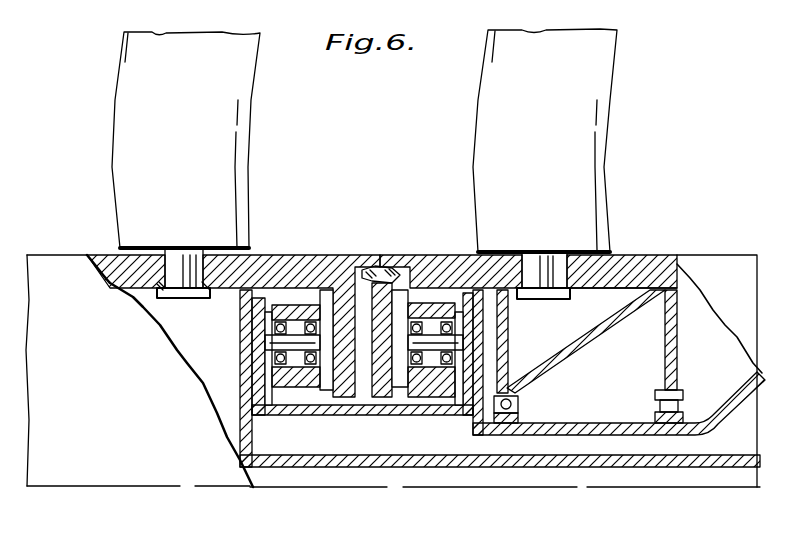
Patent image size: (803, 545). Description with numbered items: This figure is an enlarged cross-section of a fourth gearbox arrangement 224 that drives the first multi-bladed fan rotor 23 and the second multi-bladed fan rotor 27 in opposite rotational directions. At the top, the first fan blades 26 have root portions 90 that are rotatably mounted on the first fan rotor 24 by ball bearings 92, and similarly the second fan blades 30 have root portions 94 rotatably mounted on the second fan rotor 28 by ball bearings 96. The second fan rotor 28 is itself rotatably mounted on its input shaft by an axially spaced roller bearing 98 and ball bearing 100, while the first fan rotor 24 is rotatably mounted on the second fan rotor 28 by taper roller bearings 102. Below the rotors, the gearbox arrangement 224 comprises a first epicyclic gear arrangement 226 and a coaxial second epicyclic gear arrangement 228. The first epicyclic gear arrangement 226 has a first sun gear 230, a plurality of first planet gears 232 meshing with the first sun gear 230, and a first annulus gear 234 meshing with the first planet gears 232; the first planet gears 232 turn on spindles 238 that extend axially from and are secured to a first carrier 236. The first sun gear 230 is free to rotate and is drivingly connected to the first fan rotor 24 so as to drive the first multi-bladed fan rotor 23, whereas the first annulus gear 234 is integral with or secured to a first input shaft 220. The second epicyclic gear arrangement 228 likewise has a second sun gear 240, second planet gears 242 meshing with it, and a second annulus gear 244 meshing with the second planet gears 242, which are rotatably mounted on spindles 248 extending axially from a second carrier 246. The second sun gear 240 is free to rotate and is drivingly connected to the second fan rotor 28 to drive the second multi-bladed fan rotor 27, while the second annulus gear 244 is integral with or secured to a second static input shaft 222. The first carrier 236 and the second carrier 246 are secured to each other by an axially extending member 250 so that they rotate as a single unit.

The first multi-bladed fan rotor 23 is at (108, 136).
The first fan blades 26 is at (133, 73).
The second multi-bladed fan rotor 27 is at (472, 143).
The second fan blades 30 is at (490, 94).
The first fan rotor 24 is at (118, 262).
The second fan rotor 28 is at (467, 267).
The root portions 90 is at (178, 294).
The ball bearings 92 is at (158, 292).
The root portions 94 is at (560, 251).
The ball bearings 96 is at (598, 287).
The roller bearing 98 is at (687, 410).
The ball bearing 100 is at (518, 403).
The taper roller bearings 102 is at (390, 268).
The first input shaft 220 is at (652, 470).
The second static input shaft 222 is at (687, 432).
The gearbox arrangement 224 is at (197, 401).
The first epicyclic gear arrangement 226 is at (322, 413).
The second epicyclic gear arrangement 228 is at (402, 413).
The first sun gear 230 is at (290, 388).
The first planet gears 232 is at (302, 320).
The first annulus gear 234 is at (277, 306).
The first carrier 236 is at (265, 338).
The spindles 238 is at (275, 352).
The second sun gear 240 is at (440, 398).
The second planet gears 242 is at (438, 322).
The second annulus gear 244 is at (432, 305).
The second carrier 246 is at (460, 335).
The spindles 248 is at (458, 346).
The axially extending member 250 is at (350, 414).